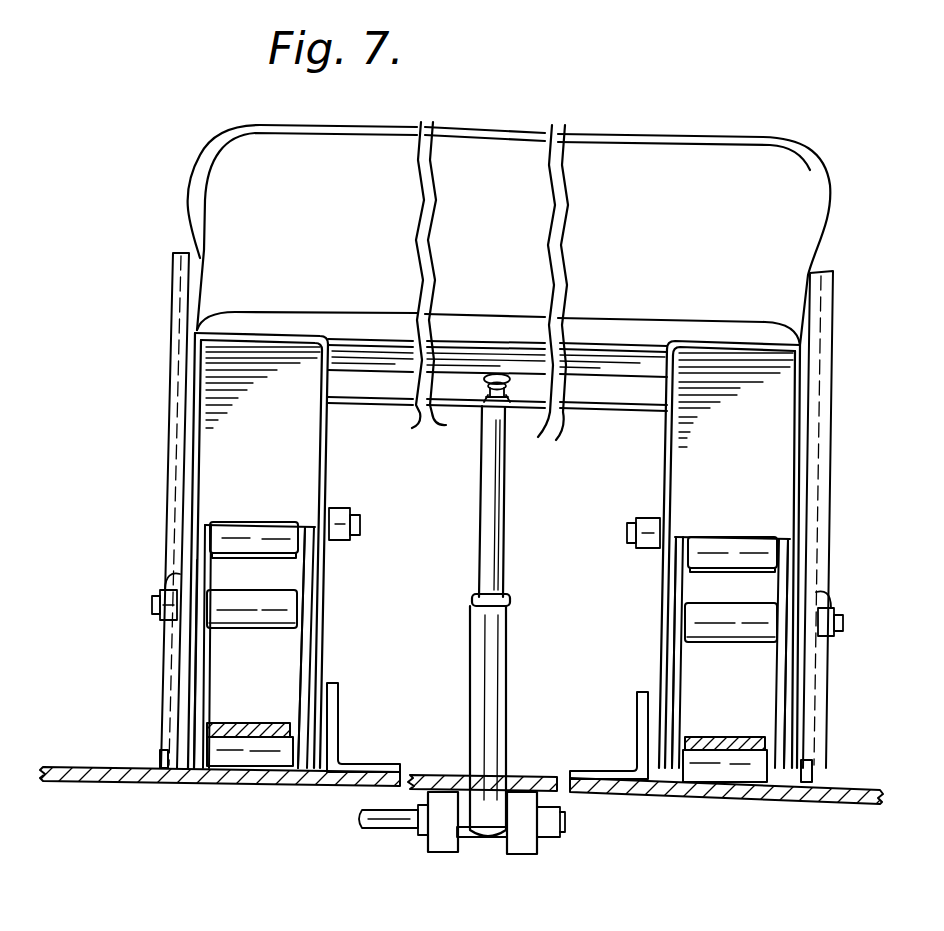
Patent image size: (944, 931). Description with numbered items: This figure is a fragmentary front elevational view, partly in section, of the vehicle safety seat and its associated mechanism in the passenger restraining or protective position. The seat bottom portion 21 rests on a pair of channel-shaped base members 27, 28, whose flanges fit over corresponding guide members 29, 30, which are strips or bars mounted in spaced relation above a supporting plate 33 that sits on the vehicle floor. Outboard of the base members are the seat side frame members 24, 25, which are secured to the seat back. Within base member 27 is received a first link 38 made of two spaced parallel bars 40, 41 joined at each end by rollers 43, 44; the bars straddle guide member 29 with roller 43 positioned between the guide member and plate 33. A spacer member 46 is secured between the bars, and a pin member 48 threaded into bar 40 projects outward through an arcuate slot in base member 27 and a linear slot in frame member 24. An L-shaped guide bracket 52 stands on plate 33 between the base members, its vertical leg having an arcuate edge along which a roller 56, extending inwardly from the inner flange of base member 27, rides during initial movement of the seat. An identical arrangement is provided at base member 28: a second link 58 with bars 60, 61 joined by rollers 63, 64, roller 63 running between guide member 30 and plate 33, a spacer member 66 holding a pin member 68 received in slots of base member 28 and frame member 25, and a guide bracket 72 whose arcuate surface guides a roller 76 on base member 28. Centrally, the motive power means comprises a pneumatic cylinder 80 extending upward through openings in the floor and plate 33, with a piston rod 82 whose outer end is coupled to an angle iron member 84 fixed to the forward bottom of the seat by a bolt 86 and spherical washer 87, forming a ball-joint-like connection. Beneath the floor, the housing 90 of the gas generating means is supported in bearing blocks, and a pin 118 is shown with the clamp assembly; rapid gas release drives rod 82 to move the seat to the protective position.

The seat bottom portion 21 is at (598, 141).
The side frame member 24 is at (832, 417).
The side frame member 25 is at (177, 280).
The base member 27 is at (652, 474).
The base member 28 is at (180, 450).
The guide member 29 is at (757, 715).
The guide member 30 is at (257, 725).
The supporting plate 33 is at (402, 775).
The first link 38 is at (658, 647).
The bar 40 is at (782, 675).
The bar 41 is at (670, 670).
The roller 43 is at (750, 767).
The roller 44 is at (757, 545).
The spacer member 46 is at (727, 627).
The pin member 48 is at (843, 624).
The guide bracket 52 is at (637, 731).
The roller 56 is at (645, 553).
The second link 58 is at (182, 658).
The bar 60 is at (307, 595).
The bar 61 is at (193, 697).
The roller 63 is at (210, 760).
The roller 64 is at (258, 528).
The spacer member 66 is at (237, 617).
The pin member 68 is at (152, 603).
The guide bracket 72 is at (330, 732).
The roller 76 is at (340, 543).
The pneumatic cylinder 80 is at (458, 705).
The piston rod 82 is at (490, 470).
The angle iron member 84 is at (489, 288).
The bolt 86 is at (490, 370).
The spherical washer 87 is at (505, 365).
The housing 90 is at (480, 850).
The pin 118 is at (363, 830).